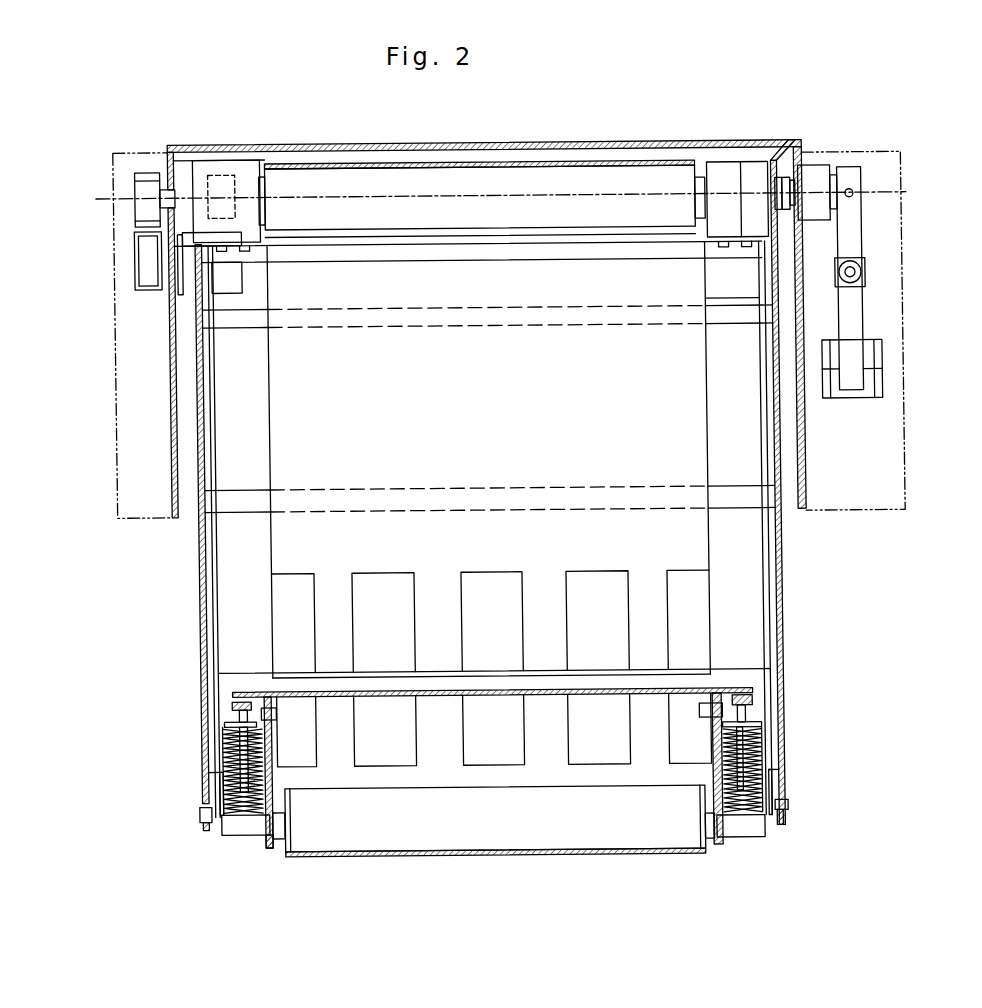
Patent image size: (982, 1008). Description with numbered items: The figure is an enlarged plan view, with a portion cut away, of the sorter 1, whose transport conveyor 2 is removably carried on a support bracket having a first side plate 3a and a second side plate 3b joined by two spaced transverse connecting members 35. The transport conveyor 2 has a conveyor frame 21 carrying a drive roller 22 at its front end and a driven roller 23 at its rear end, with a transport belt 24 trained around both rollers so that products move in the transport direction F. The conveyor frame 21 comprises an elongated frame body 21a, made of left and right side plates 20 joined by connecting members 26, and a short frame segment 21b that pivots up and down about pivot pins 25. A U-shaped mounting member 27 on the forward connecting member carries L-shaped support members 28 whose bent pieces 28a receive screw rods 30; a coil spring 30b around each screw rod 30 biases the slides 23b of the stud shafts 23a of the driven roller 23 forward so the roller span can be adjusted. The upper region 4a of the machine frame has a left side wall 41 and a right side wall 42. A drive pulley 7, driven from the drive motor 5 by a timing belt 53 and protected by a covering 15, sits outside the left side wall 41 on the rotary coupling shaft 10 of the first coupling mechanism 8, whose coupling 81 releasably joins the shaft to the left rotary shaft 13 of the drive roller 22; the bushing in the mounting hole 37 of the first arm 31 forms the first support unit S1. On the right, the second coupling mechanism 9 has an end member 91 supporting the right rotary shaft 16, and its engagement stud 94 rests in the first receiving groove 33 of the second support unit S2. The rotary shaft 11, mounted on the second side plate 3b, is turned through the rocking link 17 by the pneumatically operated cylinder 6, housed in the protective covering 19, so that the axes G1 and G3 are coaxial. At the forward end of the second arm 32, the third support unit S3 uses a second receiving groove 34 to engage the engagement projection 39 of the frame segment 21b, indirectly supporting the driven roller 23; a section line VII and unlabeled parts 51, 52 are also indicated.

The sorter 1 is at (105, 179).
The transport conveyor 2 is at (719, 443).
The first side plate 3a is at (199, 551).
The second side plate 3b is at (781, 562).
The upper region of the machine frame structure 4a is at (491, 142).
The drive motor 5 is at (232, 292).
The pneumatically operated cylinder 6 is at (860, 318).
The drive pulley 7 is at (139, 202).
The first coupling mechanism 8 is at (232, 158).
The second coupling mechanism 9 is at (730, 162).
The rotary coupling shaft 10 is at (170, 187).
The rotary shaft 11 is at (806, 185).
The left rotary shaft 13 is at (270, 200).
The protective covering 15 is at (117, 461).
The right rotary shaft 16 is at (700, 190).
The rocking link 17 is at (865, 230).
The protective covering 19 is at (905, 314).
The side plates 20 is at (213, 590).
The conveyor frame 21 is at (128, 720).
The frame body 21a is at (212, 716).
The frame segment 21b is at (216, 790).
The drive roller 22 is at (622, 176).
The driven roller 23 is at (446, 842).
The stud shafts 23a is at (284, 819).
The slides 23b is at (240, 833).
The transport belt 24 is at (561, 162).
The pivot pins 25 is at (273, 712).
The connecting members 26 is at (421, 261).
The mounting member 27 is at (549, 696).
The support members 28 is at (259, 741).
The bent piece 28a is at (262, 692).
The screw rod 30 is at (238, 700).
The coil spring 30b is at (268, 778).
The first arm 31 is at (205, 374).
The second arm 32 is at (203, 650).
The first receiving groove 33 is at (768, 200).
The second receiving groove 34 is at (203, 826).
The transverse connecting members 35 is at (557, 327).
The mounting hole 37 is at (231, 246).
The engagement projection 39 is at (195, 812).
The left side wall 41 is at (172, 392).
The right side wall 42 is at (810, 470).
The thin plate 51 is at (183, 283).
The left actuator 52 is at (146, 255).
The timing belt 53 is at (148, 290).
The coupling 81 is at (239, 172).
The end member 91 is at (744, 170).
The engagement stud 94 is at (787, 180).
The axis of rotation of the drive roller G1 is at (392, 163).
The axis of rotation of the rotary shaft G3 is at (878, 192).
The first support unit S1 is at (200, 158).
The second support unit S2 is at (782, 168).
The third support unit S3 is at (204, 832).
The transport direction F is at (493, 412).
The section line VII is at (768, 142).